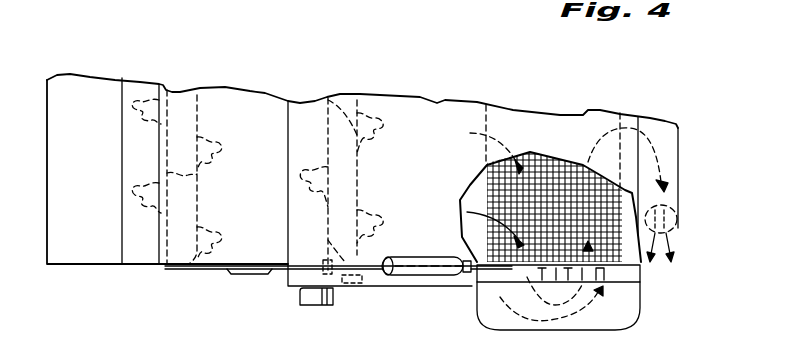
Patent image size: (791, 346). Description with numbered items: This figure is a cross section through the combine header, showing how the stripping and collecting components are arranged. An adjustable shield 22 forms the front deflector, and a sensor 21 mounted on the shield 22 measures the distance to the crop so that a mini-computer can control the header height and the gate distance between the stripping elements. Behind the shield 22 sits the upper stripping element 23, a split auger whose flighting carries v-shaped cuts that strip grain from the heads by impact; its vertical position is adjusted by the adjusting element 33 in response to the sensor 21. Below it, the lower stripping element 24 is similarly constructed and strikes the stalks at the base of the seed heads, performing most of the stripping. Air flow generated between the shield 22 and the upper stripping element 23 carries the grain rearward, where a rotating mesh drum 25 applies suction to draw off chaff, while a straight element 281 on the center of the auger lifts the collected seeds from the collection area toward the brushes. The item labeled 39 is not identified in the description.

The sensor 21 is at (313, 307).
The shield 22 is at (88, 265).
The upper stripping element 23 is at (200, 192).
The lower stripping element 24 is at (360, 187).
The drum 25 is at (566, 128).
The adjusting element 33 is at (420, 278).
The outlet duct 39 is at (678, 162).
The straight element 281 is at (642, 283).